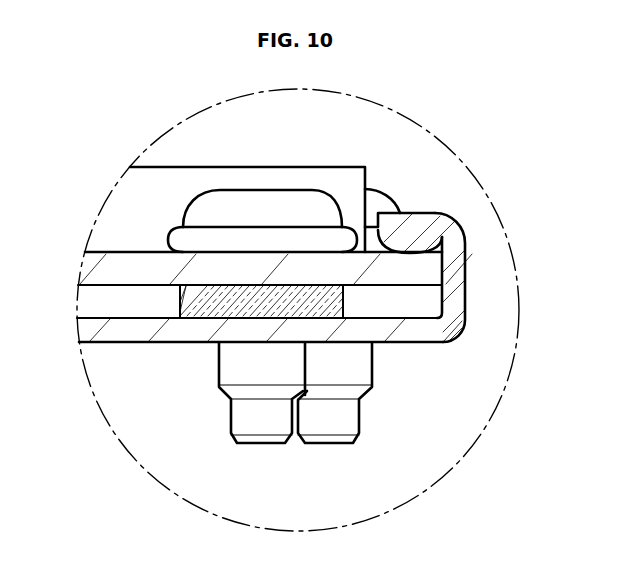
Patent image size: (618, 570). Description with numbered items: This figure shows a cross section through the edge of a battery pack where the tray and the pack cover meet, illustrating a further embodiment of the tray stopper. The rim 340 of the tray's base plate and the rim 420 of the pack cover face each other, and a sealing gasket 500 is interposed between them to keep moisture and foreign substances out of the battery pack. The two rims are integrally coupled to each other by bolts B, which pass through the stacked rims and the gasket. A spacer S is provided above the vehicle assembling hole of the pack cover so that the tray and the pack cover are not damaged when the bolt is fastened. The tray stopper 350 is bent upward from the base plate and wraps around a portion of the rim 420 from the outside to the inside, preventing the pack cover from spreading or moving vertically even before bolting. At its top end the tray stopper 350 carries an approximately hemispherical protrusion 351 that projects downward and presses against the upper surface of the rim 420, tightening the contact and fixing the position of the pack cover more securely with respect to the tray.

The spacer S is at (325, 180).
The bolt B is at (260, 203).
The rim of the pack cover 420 is at (98, 270).
The sealing gasket 500 is at (193, 307).
The rim of the base plate 340 is at (398, 332).
The tray stopper 350 is at (478, 272).
The protrusion 351 is at (408, 243).